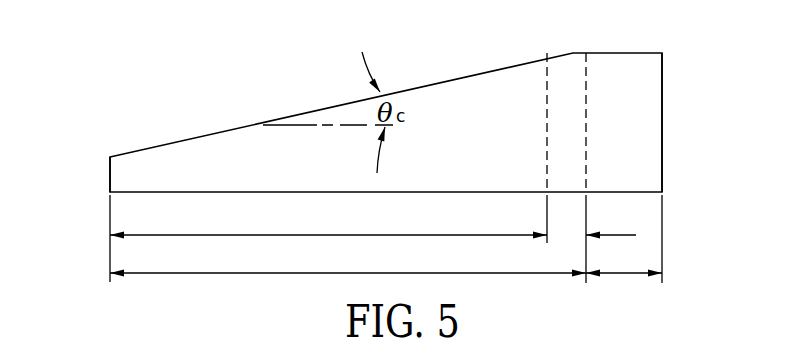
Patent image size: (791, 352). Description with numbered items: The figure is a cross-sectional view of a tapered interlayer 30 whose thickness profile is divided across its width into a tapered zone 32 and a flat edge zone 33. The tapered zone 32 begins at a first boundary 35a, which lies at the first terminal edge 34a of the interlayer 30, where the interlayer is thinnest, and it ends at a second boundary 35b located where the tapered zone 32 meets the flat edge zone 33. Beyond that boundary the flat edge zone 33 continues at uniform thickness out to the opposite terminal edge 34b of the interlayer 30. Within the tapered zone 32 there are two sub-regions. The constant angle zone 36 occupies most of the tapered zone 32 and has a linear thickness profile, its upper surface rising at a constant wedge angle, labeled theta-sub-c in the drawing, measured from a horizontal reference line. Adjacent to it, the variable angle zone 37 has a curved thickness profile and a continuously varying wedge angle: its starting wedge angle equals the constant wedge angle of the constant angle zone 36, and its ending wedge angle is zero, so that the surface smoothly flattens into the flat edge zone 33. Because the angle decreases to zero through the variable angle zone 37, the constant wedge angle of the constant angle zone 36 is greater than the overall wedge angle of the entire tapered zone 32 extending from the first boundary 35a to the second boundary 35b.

The interlayer 30 is at (196, 87).
The tapered zone 32 is at (348, 263).
The flat edge zone 33 is at (624, 263).
The first terminal edge 34a is at (109, 170).
The second terminal edge 34b is at (662, 105).
The first boundary 35a is at (109, 180).
The second boundary 35b is at (586, 93).
The constant angle zone 36 is at (328, 224).
The variable angle zone 37 is at (595, 224).